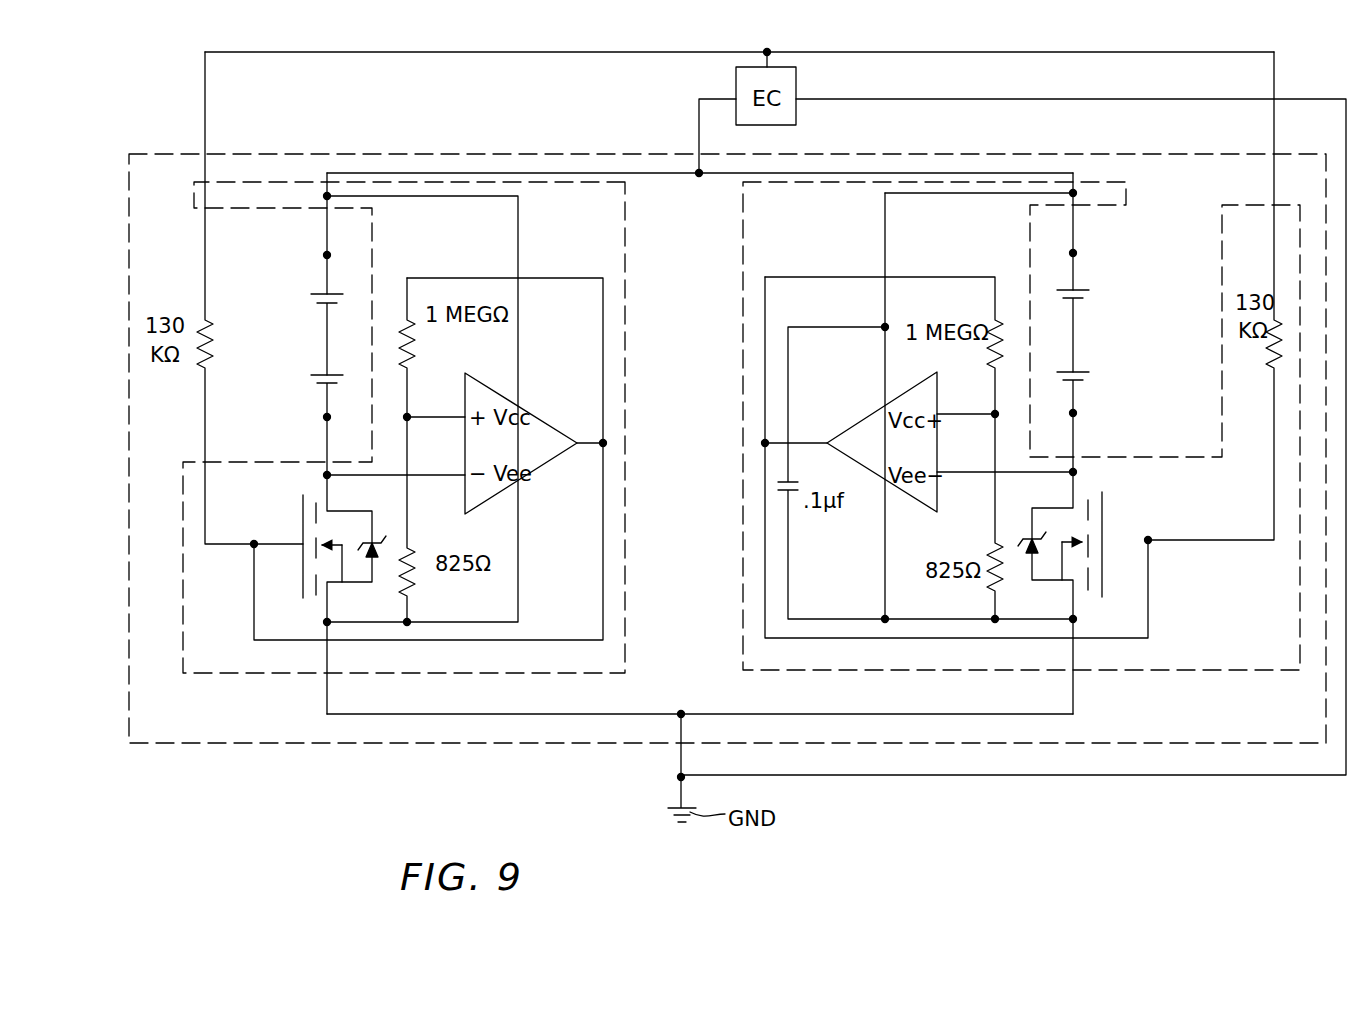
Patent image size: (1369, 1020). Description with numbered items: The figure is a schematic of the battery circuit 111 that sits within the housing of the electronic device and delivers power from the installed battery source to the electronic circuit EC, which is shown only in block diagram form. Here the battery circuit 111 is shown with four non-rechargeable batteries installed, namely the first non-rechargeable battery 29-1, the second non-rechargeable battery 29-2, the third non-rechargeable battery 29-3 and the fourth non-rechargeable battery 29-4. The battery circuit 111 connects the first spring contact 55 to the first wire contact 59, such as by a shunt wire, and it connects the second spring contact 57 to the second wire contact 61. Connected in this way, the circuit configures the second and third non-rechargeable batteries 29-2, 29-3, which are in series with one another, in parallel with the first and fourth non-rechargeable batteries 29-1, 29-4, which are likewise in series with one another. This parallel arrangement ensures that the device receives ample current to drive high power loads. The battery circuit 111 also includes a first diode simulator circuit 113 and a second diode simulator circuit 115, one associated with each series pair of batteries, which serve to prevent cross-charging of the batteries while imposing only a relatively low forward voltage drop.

The battery circuit 111 is at (243, 745).
The first diode simulator circuit 113 is at (243, 675).
The second diode simulator circuit 115 is at (1195, 672).
The first spring contact 55 is at (327, 255).
The third non-rechargeable battery 29-3 is at (305, 300).
The second non-rechargeable battery 29-2 is at (310, 379).
The second wire contact 61 is at (327, 417).
The first wire contact 59 is at (1073, 253).
The first non-rechargeable battery 29-1 is at (1094, 294).
The fourth non-rechargeable battery 29-4 is at (1094, 373).
The second spring contact 57 is at (1073, 413).